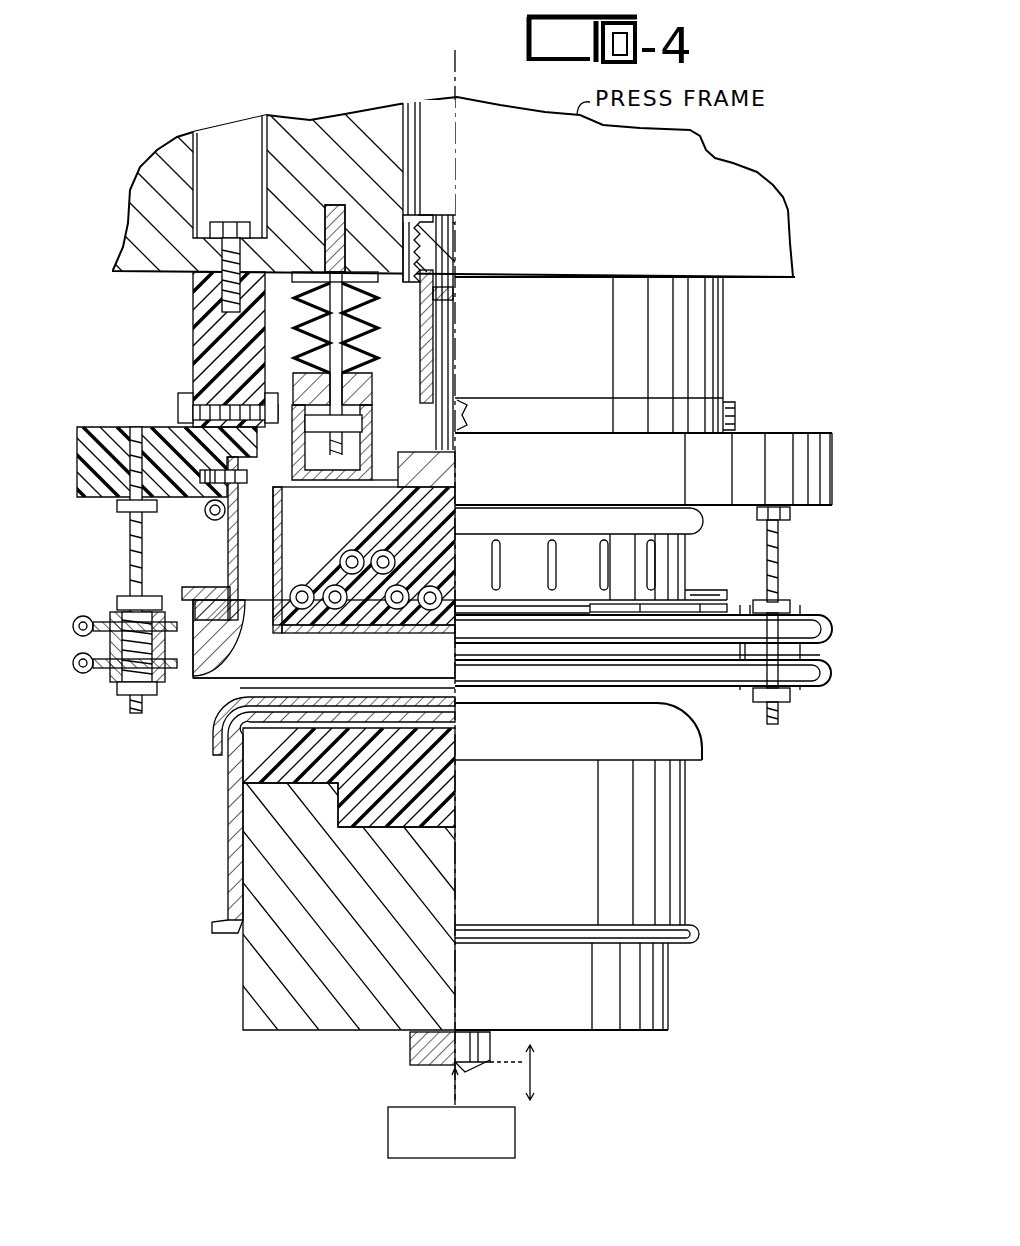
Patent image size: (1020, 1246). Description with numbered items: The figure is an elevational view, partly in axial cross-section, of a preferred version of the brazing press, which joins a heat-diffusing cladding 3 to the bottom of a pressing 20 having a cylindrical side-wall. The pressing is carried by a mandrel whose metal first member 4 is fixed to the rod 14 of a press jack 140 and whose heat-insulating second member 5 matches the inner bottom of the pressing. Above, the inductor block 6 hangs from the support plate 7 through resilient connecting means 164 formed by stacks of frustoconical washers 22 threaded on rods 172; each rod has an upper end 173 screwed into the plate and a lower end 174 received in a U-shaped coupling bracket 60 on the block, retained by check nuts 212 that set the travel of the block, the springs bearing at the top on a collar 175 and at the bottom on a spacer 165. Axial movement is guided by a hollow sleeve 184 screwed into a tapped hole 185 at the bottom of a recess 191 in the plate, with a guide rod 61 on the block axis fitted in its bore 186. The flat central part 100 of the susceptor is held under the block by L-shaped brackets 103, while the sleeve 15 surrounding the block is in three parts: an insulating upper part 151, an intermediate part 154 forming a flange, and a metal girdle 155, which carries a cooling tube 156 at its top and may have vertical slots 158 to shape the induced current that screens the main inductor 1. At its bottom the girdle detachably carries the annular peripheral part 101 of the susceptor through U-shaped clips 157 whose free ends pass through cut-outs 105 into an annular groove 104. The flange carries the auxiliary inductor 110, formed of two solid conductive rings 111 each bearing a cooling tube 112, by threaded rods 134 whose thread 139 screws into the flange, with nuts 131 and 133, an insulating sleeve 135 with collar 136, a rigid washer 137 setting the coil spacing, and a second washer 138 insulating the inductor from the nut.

The main inductor 1 is at (428, 612).
The heat-diffusing cladding 3 is at (216, 758).
The first member of the mandrel 4 is at (243, 990).
The second member of the mandrel 5 is at (440, 775).
The inductor block 6 is at (380, 630).
The support plate 7 is at (163, 173).
The rod of the press jack 14 is at (410, 1056).
The sleeve 15 is at (117, 382).
The pressing 20 is at (228, 882).
The stacked frustoconical washers 22 is at (370, 315).
The U-shaped coupling bracket 60 is at (295, 418).
The guide rod 61 is at (430, 417).
The flat central part of the susceptor 100 is at (372, 636).
The annular peripheral part of the susceptor 101 is at (252, 683).
The L-shaped brackets 103 is at (268, 625).
The annular groove 104 is at (485, 606).
The cut-outs 105 is at (620, 606).
The auxiliary inductor 110 is at (812, 615).
The solid conductive rings 111 is at (100, 605).
The tube 112 is at (96, 612).
The nut 131 is at (130, 600).
The nut 133 is at (117, 507).
The threaded rod 134 is at (128, 560).
The insulating sleeve 135 is at (145, 700).
The collar 136 is at (168, 606).
The rigid washer 137 is at (220, 695).
The insulating washer 138 is at (210, 705).
The thread 139 is at (155, 533).
The press jack 140 is at (515, 1125).
The upper part of the sleeve 151 is at (192, 330).
The intermediate part (flange) 154 is at (163, 424).
The metal girdle 155 is at (258, 570).
The metal tube 156 is at (210, 516).
The U-shaped clips 157 is at (196, 586).
The vertical slots 158 is at (548, 566).
The resilient connecting means 164 is at (292, 320).
The spacer 165 is at (370, 385).
The rod 172 is at (358, 338).
The upper end of the rod 173 is at (325, 236).
The lower end of the rod 174 is at (325, 448).
The collar 175 is at (292, 334).
The hollow sleeve 184 is at (428, 212).
The tapped hole 185 is at (405, 243).
The bore 186 is at (447, 258).
The recess 191 is at (412, 112).
The check nuts 212 is at (395, 432).